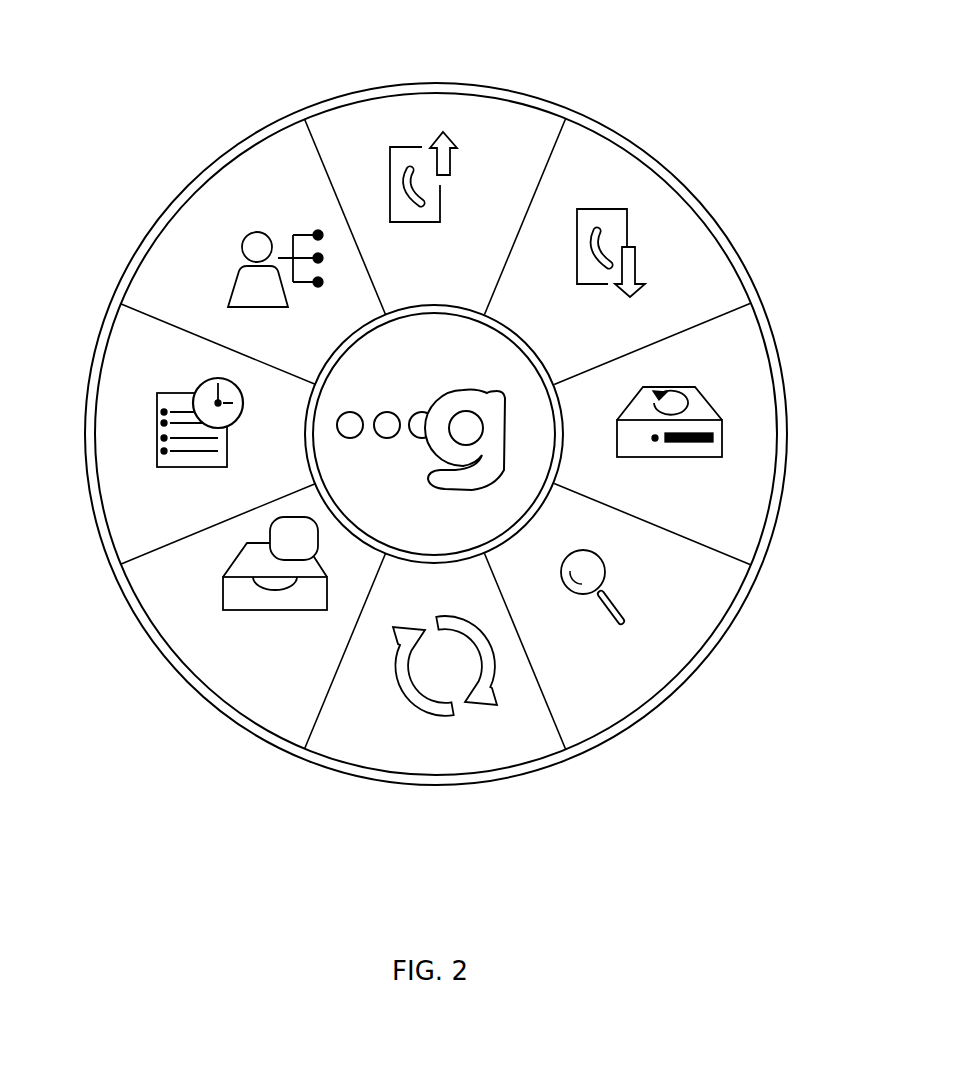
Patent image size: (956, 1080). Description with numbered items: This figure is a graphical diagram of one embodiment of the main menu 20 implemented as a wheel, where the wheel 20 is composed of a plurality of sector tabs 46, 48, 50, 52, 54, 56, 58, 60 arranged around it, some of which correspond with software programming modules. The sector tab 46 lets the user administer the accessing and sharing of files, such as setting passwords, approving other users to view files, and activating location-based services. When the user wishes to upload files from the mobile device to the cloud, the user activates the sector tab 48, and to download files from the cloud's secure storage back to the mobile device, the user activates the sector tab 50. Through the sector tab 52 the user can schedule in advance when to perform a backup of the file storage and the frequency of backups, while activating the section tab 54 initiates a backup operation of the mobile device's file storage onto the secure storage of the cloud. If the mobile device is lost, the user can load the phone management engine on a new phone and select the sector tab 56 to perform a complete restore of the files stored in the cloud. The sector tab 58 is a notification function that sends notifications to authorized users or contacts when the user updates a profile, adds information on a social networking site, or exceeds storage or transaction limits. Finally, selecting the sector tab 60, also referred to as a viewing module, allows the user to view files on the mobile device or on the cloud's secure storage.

The main menu 20 is at (132, 837).
The sector tab 46 is at (258, 173).
The sector tab 48 is at (470, 115).
The sector tab 50 is at (668, 240).
The sector tab 52 is at (113, 402).
The section tab 54 is at (735, 407).
The sector tab 56 is at (482, 740).
The sector tab 58 is at (200, 652).
The sector tab 60 is at (645, 650).